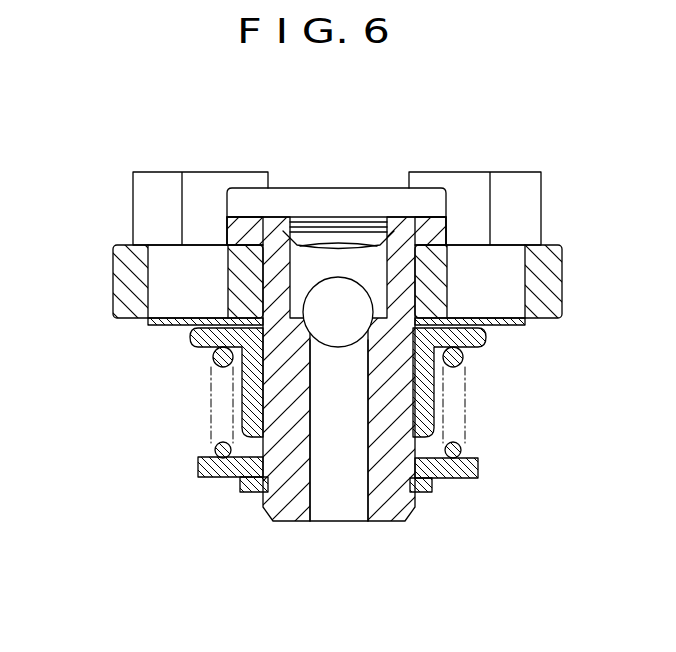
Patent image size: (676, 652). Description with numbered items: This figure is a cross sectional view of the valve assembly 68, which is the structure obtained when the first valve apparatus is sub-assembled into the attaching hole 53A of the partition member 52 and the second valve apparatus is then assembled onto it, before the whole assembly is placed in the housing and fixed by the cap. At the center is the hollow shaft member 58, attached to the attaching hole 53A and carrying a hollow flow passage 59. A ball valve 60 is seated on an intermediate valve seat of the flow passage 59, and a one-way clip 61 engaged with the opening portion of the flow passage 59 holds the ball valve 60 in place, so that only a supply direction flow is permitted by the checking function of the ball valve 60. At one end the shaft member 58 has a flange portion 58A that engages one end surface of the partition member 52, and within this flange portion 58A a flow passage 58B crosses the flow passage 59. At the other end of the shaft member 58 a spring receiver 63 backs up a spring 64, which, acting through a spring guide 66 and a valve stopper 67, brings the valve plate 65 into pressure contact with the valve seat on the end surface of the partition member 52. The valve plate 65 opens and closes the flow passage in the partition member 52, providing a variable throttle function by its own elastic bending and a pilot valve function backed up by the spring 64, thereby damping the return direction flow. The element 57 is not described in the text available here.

The valve assembly 68 is at (100, 135).
The support bracket 57 is at (132, 188).
The hollow shaft member 58 is at (398, 503).
The flange portion 58A is at (232, 234).
The flow passage 58B is at (288, 200).
The one-way clip 61 is at (357, 236).
The ball valve 60 is at (348, 330).
The hollow flow passage 59 is at (368, 500).
The partition member 52 is at (113, 280).
The attaching hole 53A is at (418, 333).
The valve plate 65 is at (148, 326).
The spring guide 66 is at (203, 350).
The valve stopper 67 is at (195, 338).
The spring 64 is at (218, 448).
The spring receiver 63 is at (255, 493).